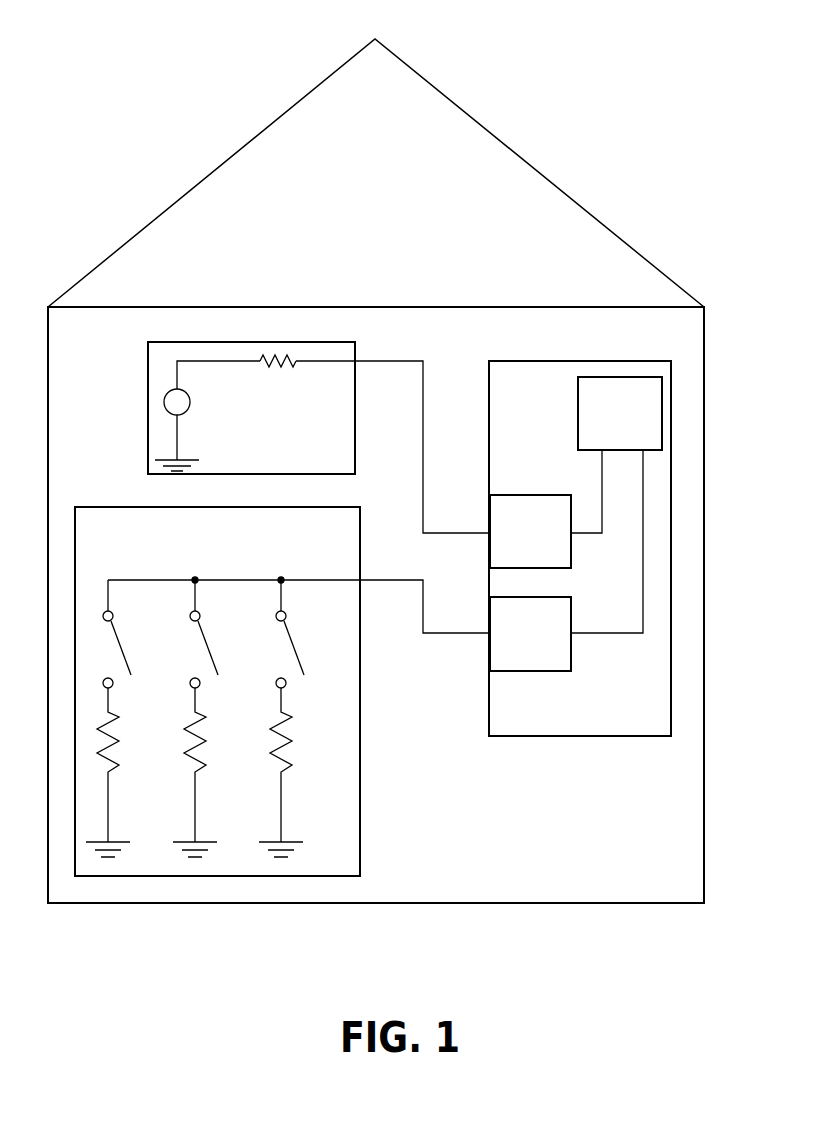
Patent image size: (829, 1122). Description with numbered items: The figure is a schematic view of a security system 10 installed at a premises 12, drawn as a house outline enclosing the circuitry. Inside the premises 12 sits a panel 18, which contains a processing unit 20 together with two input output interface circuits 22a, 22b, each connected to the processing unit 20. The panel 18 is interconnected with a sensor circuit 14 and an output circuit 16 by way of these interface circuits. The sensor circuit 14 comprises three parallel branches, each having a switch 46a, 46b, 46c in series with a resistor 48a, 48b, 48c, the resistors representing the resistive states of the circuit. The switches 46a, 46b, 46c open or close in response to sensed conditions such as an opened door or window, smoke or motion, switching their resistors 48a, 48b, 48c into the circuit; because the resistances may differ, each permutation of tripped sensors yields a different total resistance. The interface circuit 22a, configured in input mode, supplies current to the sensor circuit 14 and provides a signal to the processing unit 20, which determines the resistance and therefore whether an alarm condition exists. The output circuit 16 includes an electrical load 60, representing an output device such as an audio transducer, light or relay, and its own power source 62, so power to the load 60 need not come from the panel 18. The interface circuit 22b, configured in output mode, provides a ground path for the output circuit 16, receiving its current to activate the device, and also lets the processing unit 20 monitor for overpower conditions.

The security system 10 is at (714, 75).
The premises 12 is at (78, 344).
The sensor circuit 14 is at (232, 545).
The output circuit 16 is at (325, 461).
The panel 18 is at (594, 729).
The processing unit 20 is at (633, 429).
The I/O interface circuit 22a is at (550, 647).
The I/O interface circuit 22b is at (550, 547).
The switch 46a is at (123, 655).
The switch 46b is at (210, 655).
The switch 46c is at (296, 655).
The resistor 48a is at (118, 750).
The resistor 48b is at (230, 738).
The resistor 48c is at (291, 750).
The electrical load 60 is at (281, 369).
The power source 62 is at (190, 401).